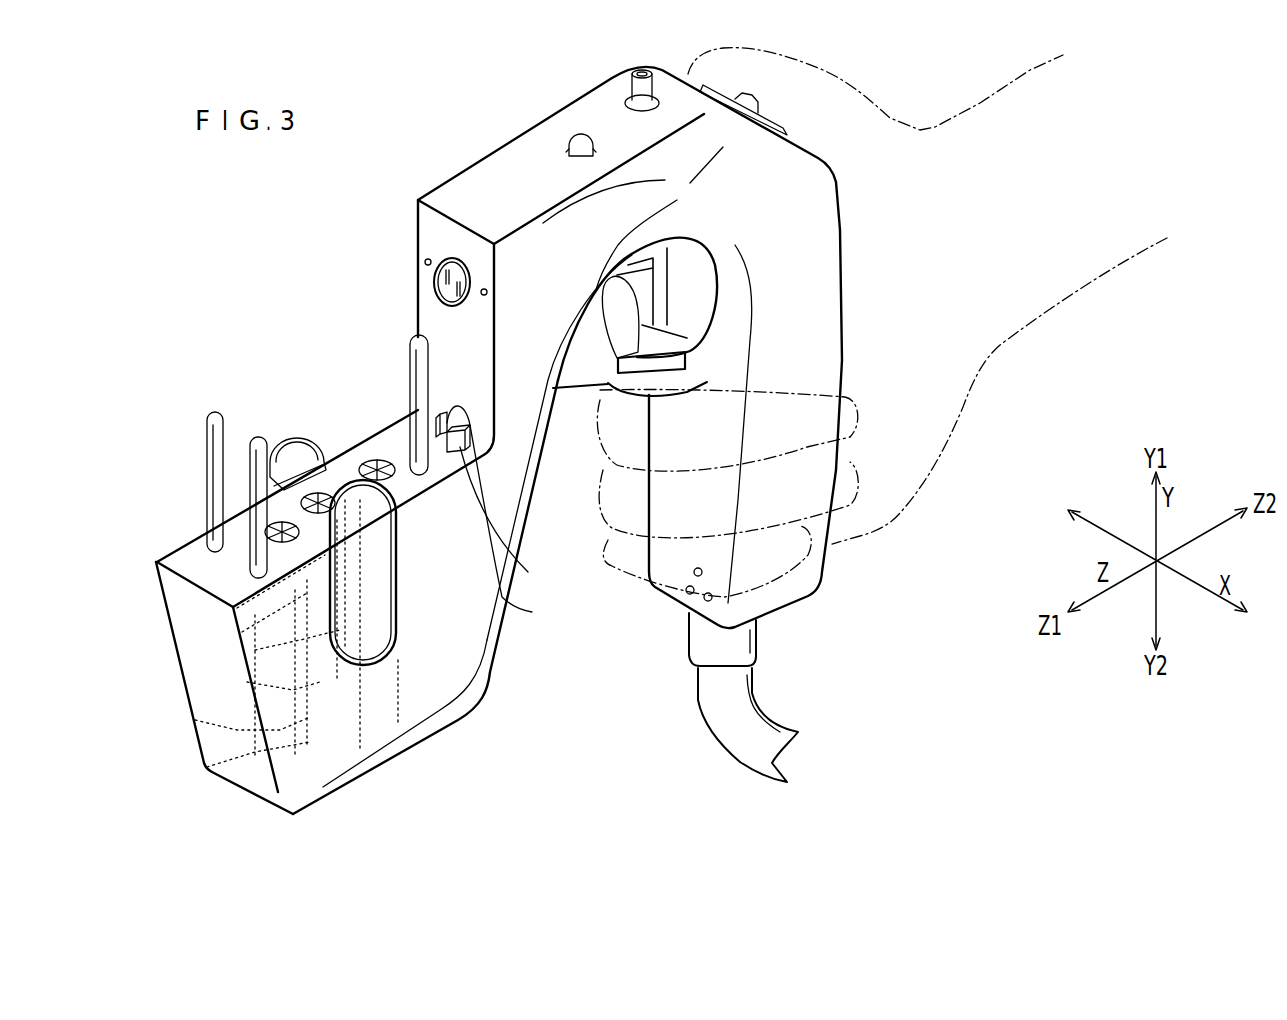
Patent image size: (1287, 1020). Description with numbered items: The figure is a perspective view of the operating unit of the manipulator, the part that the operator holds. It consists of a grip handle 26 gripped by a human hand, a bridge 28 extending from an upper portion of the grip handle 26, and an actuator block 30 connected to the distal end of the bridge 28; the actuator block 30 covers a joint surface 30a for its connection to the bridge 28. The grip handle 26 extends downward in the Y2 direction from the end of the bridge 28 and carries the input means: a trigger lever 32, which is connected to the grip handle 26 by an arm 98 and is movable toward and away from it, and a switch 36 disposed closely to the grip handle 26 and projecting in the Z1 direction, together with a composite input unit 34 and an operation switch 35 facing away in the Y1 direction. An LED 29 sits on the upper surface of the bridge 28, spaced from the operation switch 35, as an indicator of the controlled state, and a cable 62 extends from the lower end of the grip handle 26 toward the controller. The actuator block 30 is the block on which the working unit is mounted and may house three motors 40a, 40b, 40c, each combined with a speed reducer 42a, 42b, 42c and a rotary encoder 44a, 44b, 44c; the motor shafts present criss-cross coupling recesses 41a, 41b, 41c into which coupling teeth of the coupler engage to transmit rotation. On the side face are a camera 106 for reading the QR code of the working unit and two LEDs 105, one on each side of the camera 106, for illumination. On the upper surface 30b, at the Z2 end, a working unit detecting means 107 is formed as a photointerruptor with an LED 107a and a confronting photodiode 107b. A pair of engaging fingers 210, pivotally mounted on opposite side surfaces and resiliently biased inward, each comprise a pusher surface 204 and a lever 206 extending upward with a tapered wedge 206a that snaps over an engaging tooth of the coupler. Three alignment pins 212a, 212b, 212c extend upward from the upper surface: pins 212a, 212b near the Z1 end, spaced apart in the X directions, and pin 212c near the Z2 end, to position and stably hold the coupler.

The grip handle 26 is at (838, 343).
The bridge 28 is at (469, 177).
The LED 29 is at (580, 134).
The actuator block 30 is at (395, 728).
The joint surface 30a is at (440, 228).
The upper surface 30b is at (222, 578).
The trigger lever 32 is at (580, 365).
The composite input unit 34 is at (752, 70).
The operation switch 35 is at (643, 69).
The switch 36 is at (652, 386).
The motor 40a is at (492, 655).
The motor 40b is at (247, 682).
The motor 40c is at (195, 720).
The coupling recess 41a is at (373, 462).
The coupling recess 41b is at (395, 532).
The coupling recess 41c is at (266, 532).
The speed reducer 42a is at (403, 572).
The speed reducer 42b is at (255, 650).
The speed reducer 42c is at (237, 608).
The rotary encoder 44a is at (455, 733).
The rotary encoder 44b is at (353, 727).
The rotary encoder 44c is at (207, 767).
The cable 62 is at (723, 692).
The arm 98 is at (647, 292).
The LED 105 is at (428, 259).
The camera 106 is at (443, 282).
The working unit detecting means 107 is at (537, 517).
The LED 107a is at (528, 572).
The photodiode 107b is at (502, 597).
The pusher surface 204 is at (373, 637).
The lever 206 is at (292, 440).
The tapered wedge 206a is at (318, 457).
The engaging finger 210 is at (396, 590).
The alignment pin 212a is at (260, 440).
The alignment pin 212b is at (217, 417).
The alignment pin 212c is at (417, 353).